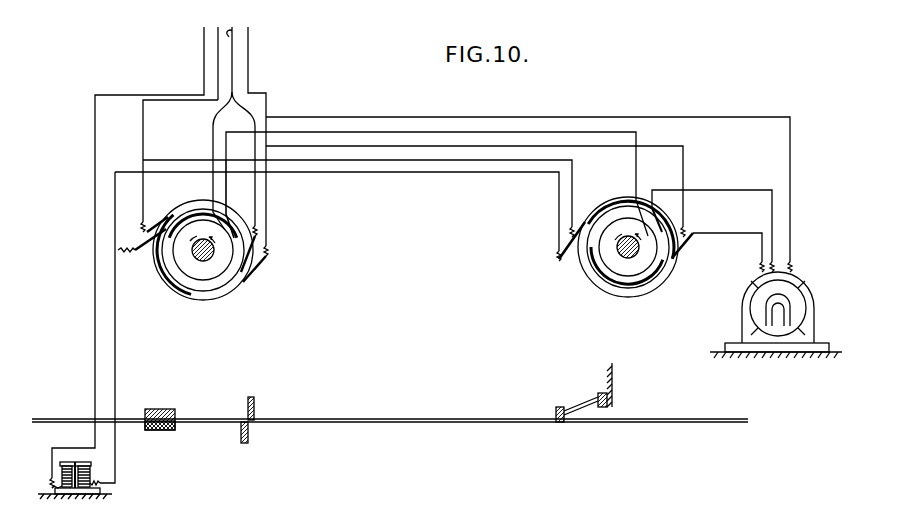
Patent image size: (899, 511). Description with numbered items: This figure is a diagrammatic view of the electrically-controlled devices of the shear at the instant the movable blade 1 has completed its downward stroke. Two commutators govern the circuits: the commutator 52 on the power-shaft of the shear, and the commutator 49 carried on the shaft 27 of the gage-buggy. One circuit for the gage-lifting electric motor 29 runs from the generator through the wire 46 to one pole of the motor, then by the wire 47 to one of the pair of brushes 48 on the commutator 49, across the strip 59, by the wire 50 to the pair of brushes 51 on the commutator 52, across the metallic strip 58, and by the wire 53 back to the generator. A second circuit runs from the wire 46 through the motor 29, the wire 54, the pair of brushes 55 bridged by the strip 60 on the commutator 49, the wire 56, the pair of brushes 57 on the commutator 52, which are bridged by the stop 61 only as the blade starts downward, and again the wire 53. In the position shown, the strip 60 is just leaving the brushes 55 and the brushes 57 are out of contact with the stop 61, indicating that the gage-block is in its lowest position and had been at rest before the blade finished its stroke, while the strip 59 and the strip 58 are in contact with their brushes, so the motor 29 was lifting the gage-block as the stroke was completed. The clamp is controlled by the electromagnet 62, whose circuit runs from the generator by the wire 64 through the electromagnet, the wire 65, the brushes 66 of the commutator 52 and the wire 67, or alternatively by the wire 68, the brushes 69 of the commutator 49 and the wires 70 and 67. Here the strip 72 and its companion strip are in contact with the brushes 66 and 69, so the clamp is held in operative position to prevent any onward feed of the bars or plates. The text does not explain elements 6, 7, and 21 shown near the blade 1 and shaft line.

The movable blade 1 is at (255, 402).
The cam 6 is at (162, 410).
The cam follower 7 is at (166, 432).
The switch lever 21 is at (556, 408).
The shaft of the gage-buggy 27 is at (628, 259).
The electric motor 29 is at (742, 304).
The wire 46 is at (248, 56).
The wire 47 is at (741, 186).
The brushes 48 is at (640, 200).
The commutator 49 is at (652, 298).
The wire 50 is at (553, 131).
The brushes 51 is at (224, 218).
The commutator 52 is at (223, 272).
The wire 53 is at (239, 258).
The wire 54 is at (747, 226).
The brushes 55 is at (692, 241).
The wire 56 is at (426, 147).
The brushes 57 is at (268, 252).
The metallic strip 58 is at (198, 216).
The strip 59 is at (652, 244).
The strip 60 is at (597, 273).
The stop 61 is at (191, 298).
The electromagnet 62 is at (90, 474).
The wire 64 is at (204, 60).
The wire 65 is at (115, 360).
The brushes 66 is at (157, 216).
The wire 67 is at (143, 125).
The wire 68 is at (372, 172).
The brushes 69 is at (568, 257).
The wire 70 is at (193, 157).
The strip 72 is at (163, 283).